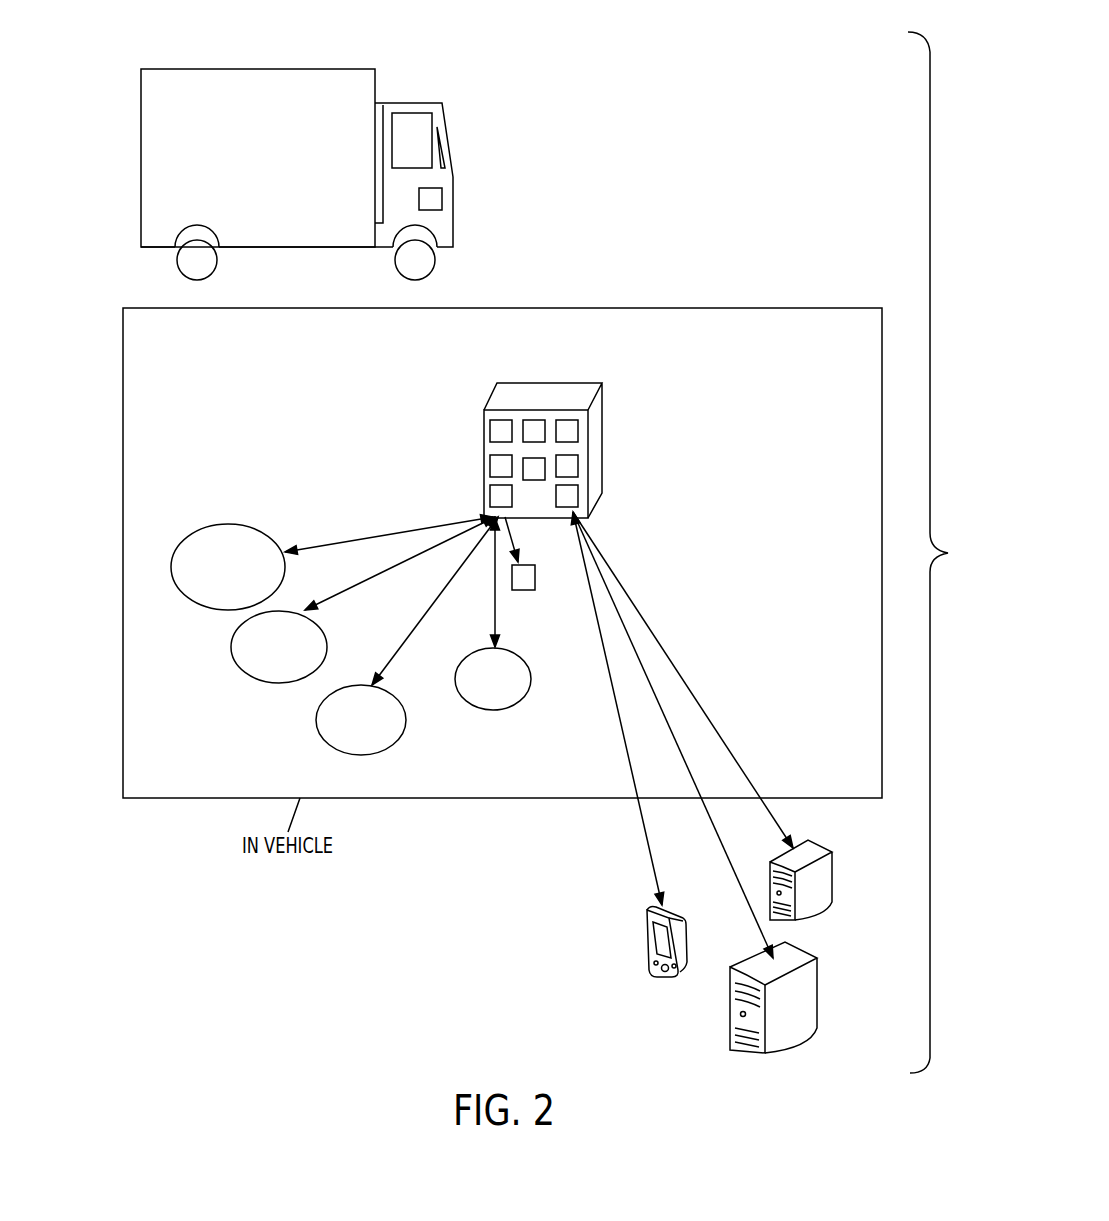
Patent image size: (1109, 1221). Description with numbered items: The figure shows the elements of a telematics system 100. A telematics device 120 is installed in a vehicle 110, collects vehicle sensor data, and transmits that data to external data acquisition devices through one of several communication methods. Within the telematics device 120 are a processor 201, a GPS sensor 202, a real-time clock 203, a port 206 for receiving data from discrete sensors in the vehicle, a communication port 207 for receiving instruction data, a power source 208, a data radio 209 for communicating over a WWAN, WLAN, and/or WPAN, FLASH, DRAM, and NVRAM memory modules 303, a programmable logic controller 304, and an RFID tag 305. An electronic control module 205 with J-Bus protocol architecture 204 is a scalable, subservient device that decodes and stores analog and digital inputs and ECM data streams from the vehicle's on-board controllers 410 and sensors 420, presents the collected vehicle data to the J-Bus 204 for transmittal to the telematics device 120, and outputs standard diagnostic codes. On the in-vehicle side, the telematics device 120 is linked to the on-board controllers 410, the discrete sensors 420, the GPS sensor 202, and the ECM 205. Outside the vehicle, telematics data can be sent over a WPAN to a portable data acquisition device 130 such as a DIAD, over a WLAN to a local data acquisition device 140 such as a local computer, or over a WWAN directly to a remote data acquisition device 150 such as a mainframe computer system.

The telematics system 100 is at (673, 237).
The vehicle 110 is at (458, 140).
The telematics device 120 is at (432, 197).
The portable data acquisition device 130 is at (645, 932).
The local data acquisition device 140 is at (833, 872).
The remote data acquisition device 150 is at (817, 987).
The processor 201 is at (490, 430).
The GPS sensor 202 is at (407, 720).
The real-time clock 203 is at (490, 465).
The J-Bus protocol architecture 204 is at (495, 607).
The electronic control module 205 is at (532, 679).
The port for receiving data from discrete sensors 206 is at (490, 495).
The communication port for receiving instruction data 207 is at (533, 420).
The power source 208 is at (535, 482).
The data radio 209 is at (577, 495).
The memory modules 303 is at (577, 430).
The programmable logic controller 304 is at (577, 465).
The RFID tag 305 is at (527, 590).
The on-board controllers 410 is at (262, 682).
The sensors 420 is at (203, 607).